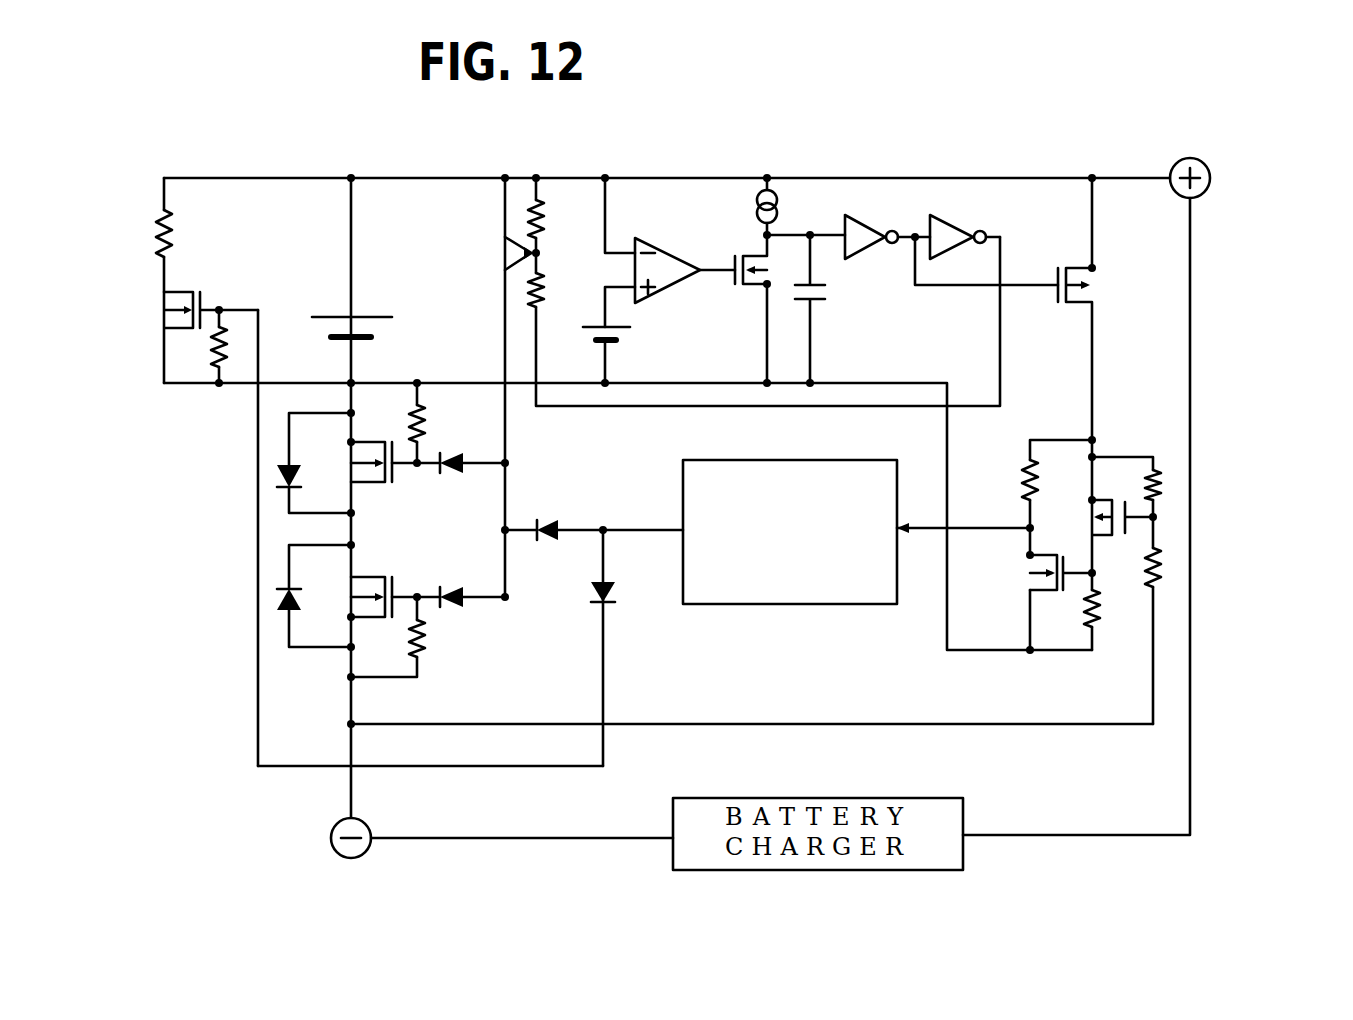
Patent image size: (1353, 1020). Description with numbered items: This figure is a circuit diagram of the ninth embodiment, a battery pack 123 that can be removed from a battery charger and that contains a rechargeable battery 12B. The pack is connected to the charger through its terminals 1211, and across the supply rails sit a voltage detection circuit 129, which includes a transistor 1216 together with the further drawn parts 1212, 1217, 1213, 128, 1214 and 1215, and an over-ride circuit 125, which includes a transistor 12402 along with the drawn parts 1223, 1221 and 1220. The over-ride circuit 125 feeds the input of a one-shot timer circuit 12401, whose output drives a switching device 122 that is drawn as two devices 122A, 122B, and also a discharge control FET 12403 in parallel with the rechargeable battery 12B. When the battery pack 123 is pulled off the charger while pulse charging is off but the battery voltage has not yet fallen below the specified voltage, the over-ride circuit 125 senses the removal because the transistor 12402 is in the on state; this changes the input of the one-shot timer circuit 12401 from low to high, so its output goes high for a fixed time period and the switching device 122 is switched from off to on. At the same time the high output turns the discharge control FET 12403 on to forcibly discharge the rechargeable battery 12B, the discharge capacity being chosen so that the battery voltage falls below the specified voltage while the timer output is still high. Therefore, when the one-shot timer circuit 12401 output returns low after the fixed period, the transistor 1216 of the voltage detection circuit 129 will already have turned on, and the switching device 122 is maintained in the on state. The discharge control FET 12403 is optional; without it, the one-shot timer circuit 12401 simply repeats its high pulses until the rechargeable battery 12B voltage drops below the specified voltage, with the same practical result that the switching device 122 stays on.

The battery pack 123 is at (224, 154).
The discharge control FET 12403 is at (198, 292).
The rechargeable battery 12B is at (386, 326).
The transistor 1216 is at (520, 253).
The voltage detection circuit 129 is at (699, 163).
The comparator 1212 is at (690, 237).
The reference voltage source 1217 is at (620, 341).
The transistor 1213 is at (750, 289).
The constant current source 128 is at (758, 196).
The capacitor 1214 is at (817, 304).
The inverter 1215 is at (909, 211).
The transistor 12402 is at (1095, 292).
The terminal 1211 is at (1175, 158).
The over-ride circuit 125 is at (1064, 544).
The resistor 1223 is at (1022, 469).
The transistor 1221 is at (1027, 572).
The transistor 1220 is at (1112, 542).
The one-shot timer circuit 12401 is at (800, 606).
The switching device 122 is at (393, 532).
The switch transistor 122A is at (383, 559).
The switch transistor 122B is at (378, 488).